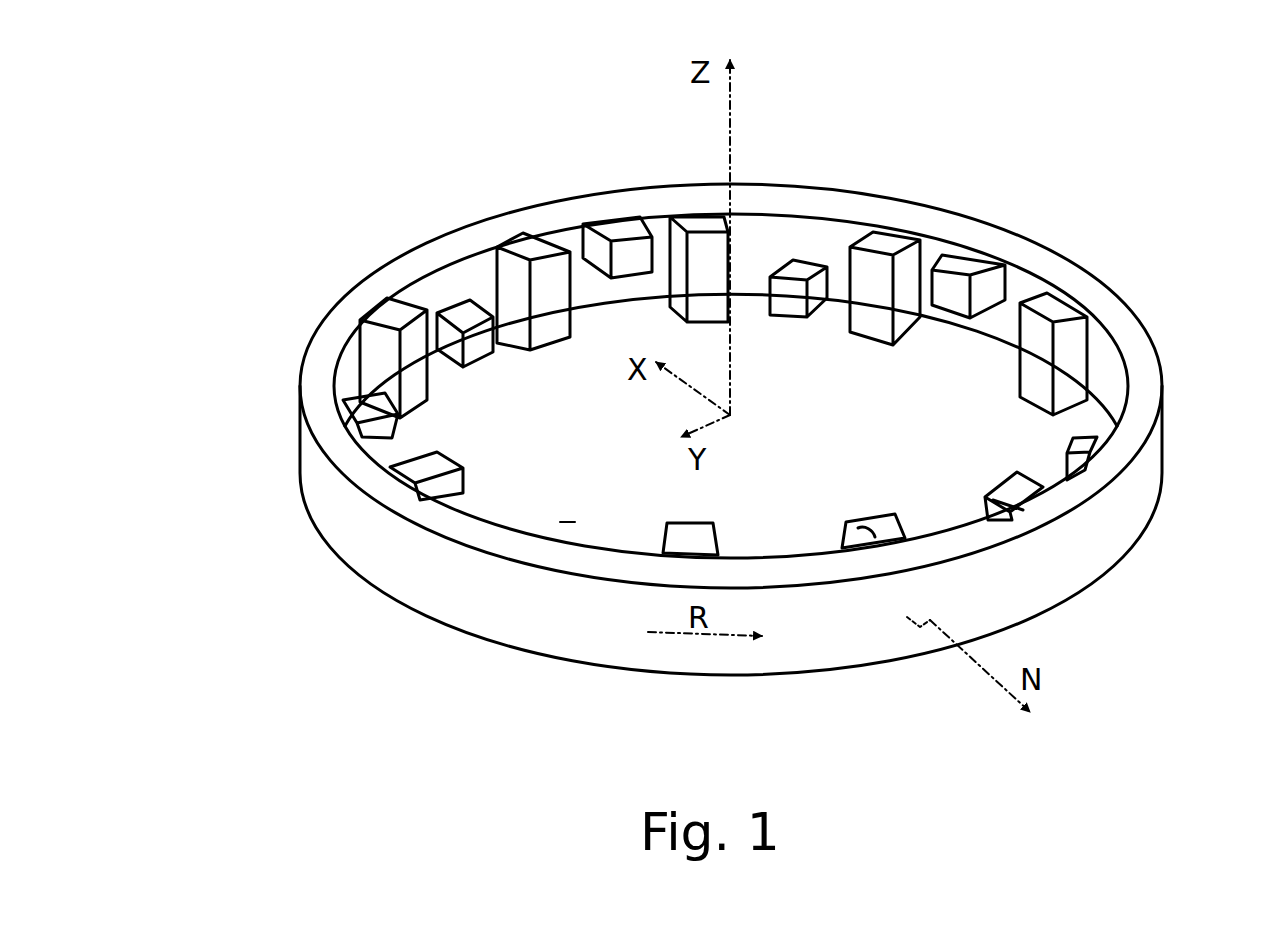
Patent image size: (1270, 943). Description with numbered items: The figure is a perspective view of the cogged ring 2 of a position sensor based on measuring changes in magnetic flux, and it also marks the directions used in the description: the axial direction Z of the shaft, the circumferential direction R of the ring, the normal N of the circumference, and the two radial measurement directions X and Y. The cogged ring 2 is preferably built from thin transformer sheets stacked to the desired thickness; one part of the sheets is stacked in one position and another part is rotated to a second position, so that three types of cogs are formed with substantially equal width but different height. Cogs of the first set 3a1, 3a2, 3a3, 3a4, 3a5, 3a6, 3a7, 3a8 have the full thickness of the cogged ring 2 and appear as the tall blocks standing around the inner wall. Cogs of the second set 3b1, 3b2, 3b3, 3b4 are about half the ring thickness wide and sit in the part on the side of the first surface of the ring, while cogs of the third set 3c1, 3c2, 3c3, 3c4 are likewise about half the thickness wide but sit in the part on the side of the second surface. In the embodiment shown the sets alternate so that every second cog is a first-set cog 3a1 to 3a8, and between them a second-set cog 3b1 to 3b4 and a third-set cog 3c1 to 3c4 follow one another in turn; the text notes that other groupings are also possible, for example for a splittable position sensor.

The cogged ring 2 is at (325, 310).
The cog of the first set 3a1 is at (537, 310).
The cog of the first set 3a2 is at (707, 240).
The cog of the first set 3a3 is at (877, 323).
The cog of the first set 3a4 is at (1057, 313).
The cog of the first set 3a5 is at (990, 490).
The cog of the first set 3a6 is at (685, 522).
The cog of the first set 3a7 is at (437, 475).
The cog of the first set 3a8 is at (388, 315).
The cog of the second set 3b1 is at (613, 235).
The cog of the second set 3b2 is at (967, 268).
The cog of the second set 3b3 is at (872, 522).
The cog of the second set 3b4 is at (358, 412).
The cog of the third set 3c1 is at (793, 267).
The cog of the third set 3c2 is at (1087, 448).
The cog of the third set 3c3 is at (567, 525).
The cog of the third set 3c4 is at (463, 310).